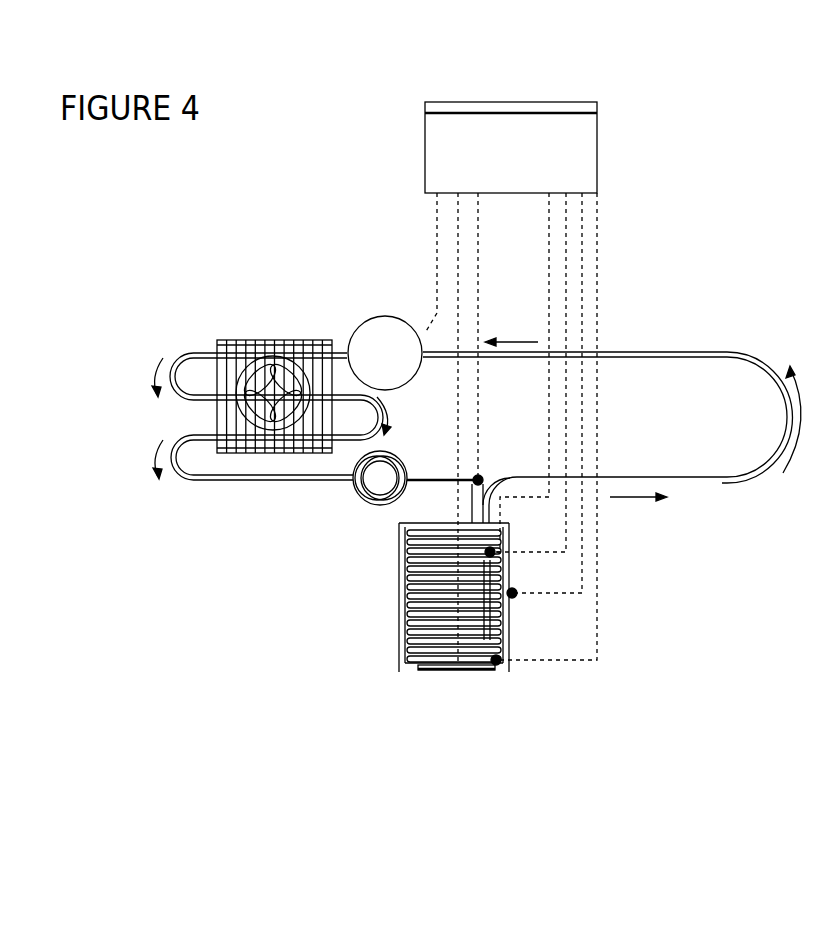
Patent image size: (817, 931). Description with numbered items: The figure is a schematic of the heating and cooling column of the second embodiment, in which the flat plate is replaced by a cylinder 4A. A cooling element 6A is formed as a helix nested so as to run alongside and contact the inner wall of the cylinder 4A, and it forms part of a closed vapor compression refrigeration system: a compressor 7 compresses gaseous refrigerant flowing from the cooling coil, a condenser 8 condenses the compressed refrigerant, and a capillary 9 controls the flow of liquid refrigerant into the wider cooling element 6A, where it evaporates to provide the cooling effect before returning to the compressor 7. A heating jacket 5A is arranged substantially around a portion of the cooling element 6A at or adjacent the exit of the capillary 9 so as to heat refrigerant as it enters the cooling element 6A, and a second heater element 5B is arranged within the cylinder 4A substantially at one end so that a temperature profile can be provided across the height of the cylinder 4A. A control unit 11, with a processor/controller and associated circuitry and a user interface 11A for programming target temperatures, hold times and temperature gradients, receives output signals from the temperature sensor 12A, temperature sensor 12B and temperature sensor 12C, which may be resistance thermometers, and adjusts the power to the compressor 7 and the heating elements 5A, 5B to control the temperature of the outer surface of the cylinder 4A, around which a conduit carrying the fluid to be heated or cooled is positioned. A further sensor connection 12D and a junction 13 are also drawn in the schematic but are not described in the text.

The cylinder 4A is at (508, 672).
The heating jacket 5A is at (480, 522).
The second heater element 5B is at (425, 672).
The cooling element 6A is at (448, 582).
The compressor 7 is at (385, 353).
The condenser 8 is at (217, 340).
The capillary 9 is at (352, 488).
The control unit 11 is at (511, 147).
The user interface 11A is at (473, 95).
The temperature sensor 12A is at (551, 209).
The temperature sensor 12B is at (568, 257).
The temperature sensor 12C is at (581, 307).
The control line 12D is at (596, 345).
The junction valve 13 is at (472, 482).